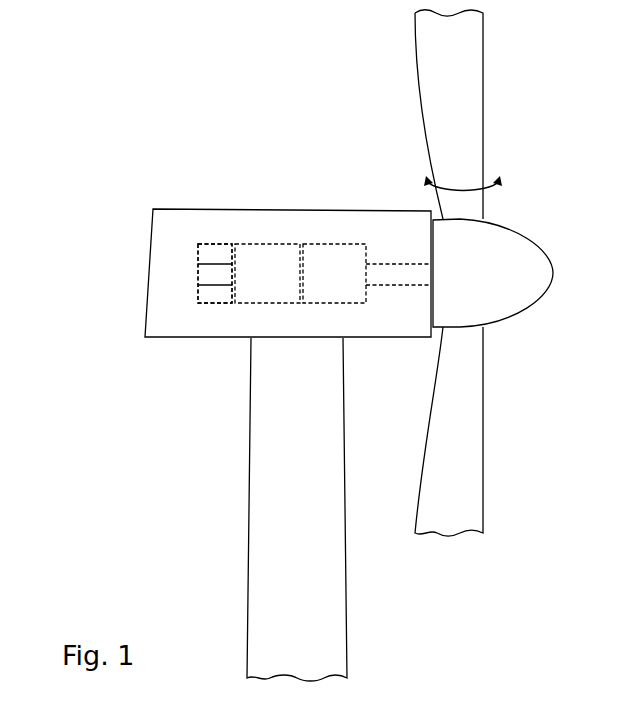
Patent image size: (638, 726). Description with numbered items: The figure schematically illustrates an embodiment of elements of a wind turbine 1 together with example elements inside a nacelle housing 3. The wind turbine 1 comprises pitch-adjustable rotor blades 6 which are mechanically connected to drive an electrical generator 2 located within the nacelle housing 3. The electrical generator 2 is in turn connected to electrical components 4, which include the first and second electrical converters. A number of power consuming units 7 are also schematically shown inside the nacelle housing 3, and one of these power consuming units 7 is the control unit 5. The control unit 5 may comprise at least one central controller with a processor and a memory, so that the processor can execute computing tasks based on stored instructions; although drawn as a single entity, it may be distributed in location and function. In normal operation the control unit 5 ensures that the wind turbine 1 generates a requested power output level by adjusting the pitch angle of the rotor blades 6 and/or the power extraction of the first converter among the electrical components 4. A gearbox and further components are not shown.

The wind turbine 1 is at (176, 104).
The electrical generator 2 is at (320, 252).
The nacelle housing 3 is at (163, 223).
The electrical components 4 is at (257, 252).
The control unit 5 is at (212, 252).
The pitch-adjustable rotor blades 6 is at (467, 91).
The power consuming units 7 is at (193, 282).